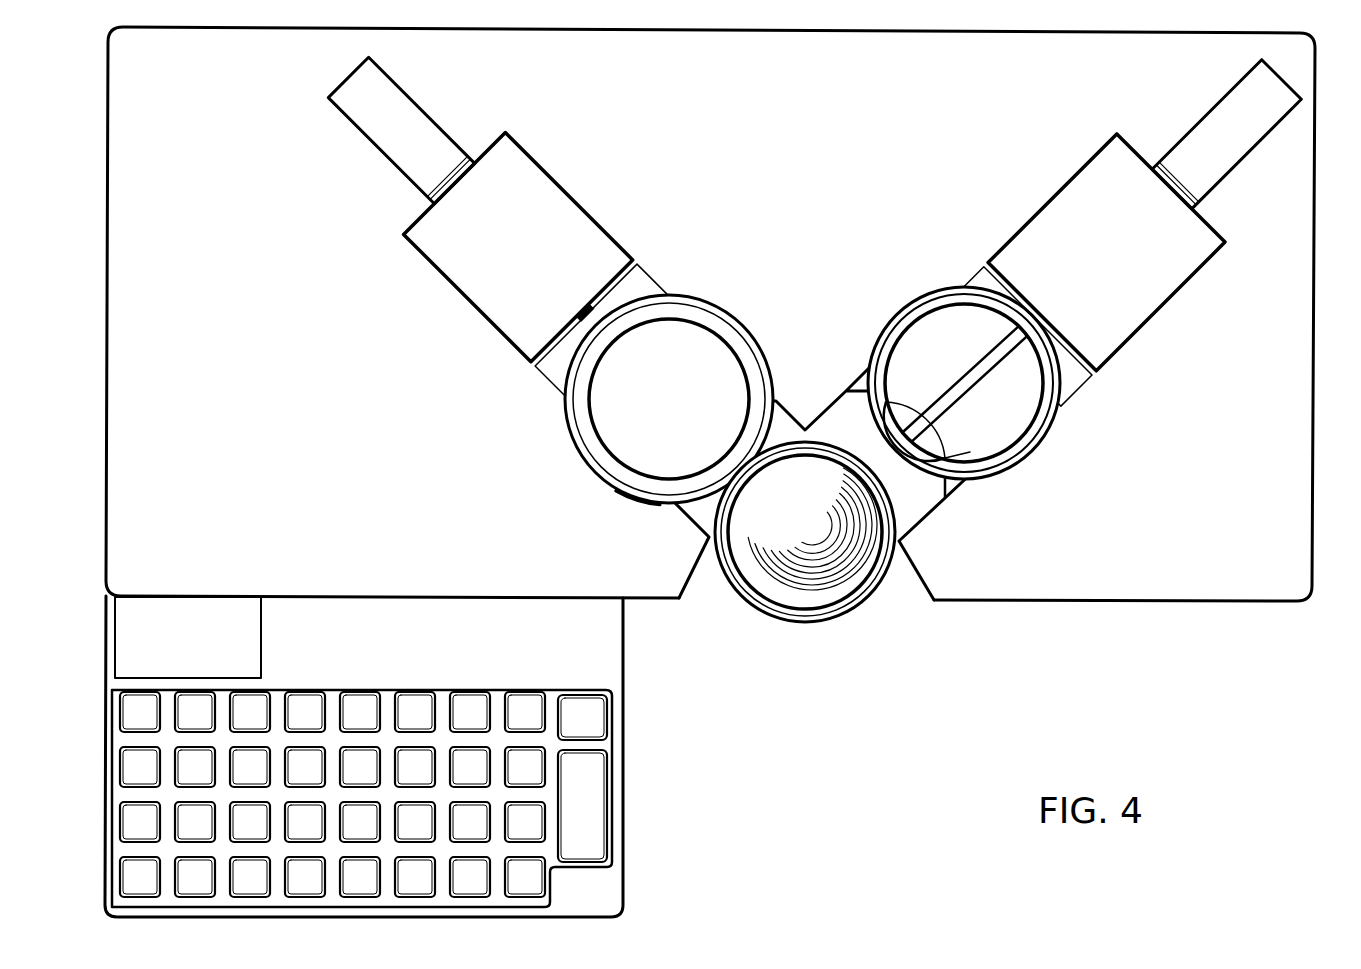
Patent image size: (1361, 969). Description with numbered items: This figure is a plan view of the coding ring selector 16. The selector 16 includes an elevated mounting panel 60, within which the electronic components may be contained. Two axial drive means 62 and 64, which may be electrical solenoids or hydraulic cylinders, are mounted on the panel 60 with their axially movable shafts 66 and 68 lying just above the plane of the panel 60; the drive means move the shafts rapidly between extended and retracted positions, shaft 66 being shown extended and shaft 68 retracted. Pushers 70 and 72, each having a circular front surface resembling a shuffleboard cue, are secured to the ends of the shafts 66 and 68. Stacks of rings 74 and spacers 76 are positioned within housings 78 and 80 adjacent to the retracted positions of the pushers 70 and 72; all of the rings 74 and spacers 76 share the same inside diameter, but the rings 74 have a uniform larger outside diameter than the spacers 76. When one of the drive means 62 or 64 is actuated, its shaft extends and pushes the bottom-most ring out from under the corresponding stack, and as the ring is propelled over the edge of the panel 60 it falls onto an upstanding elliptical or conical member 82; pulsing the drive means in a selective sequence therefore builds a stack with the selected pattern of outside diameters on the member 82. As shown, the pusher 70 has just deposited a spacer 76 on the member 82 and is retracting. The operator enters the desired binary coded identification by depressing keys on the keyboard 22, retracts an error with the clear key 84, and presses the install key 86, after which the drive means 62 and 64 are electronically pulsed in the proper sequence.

The ring selector 16 is at (733, 472).
The keyboard 22 is at (413, 756).
The elevated mounting panel 60 is at (1315, 262).
The axial drive means 62 is at (1062, 193).
The axial drive means 64 is at (522, 149).
The axially movable shaft 66 is at (963, 371).
The axially movable shaft 68 is at (589, 305).
The pusher 70 is at (958, 445).
The pusher 72 is at (655, 282).
The rings 74 is at (689, 476).
The spacers 76 is at (917, 461).
The housing 78 is at (1030, 456).
The housing 80 is at (626, 496).
The upstanding elliptical or conical member 82 is at (806, 604).
The clear key 84 is at (589, 698).
The install key 86 is at (596, 860).